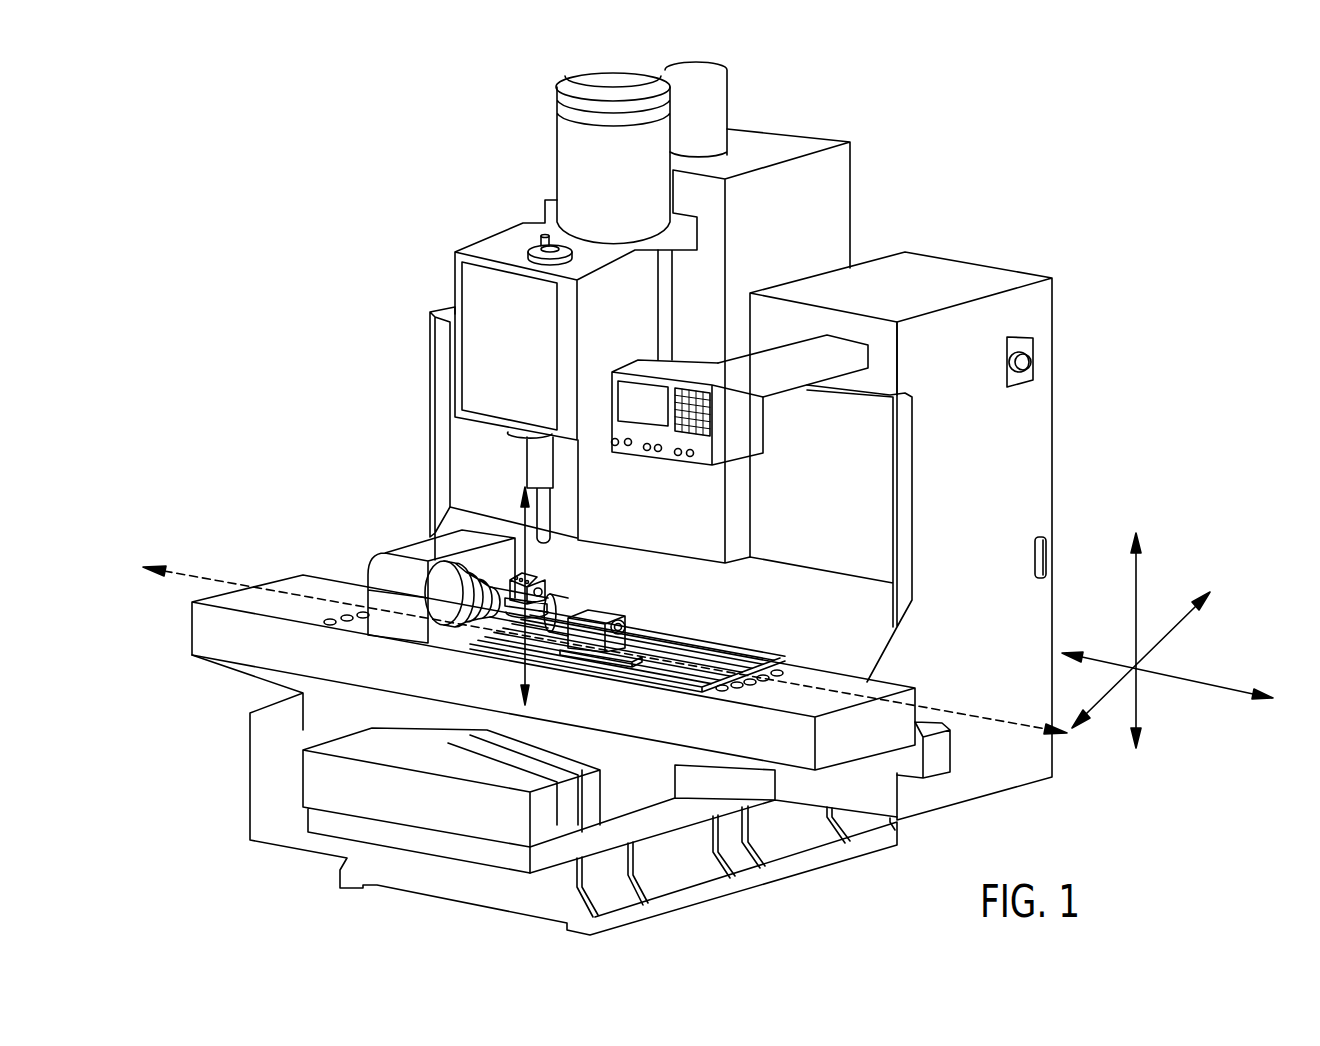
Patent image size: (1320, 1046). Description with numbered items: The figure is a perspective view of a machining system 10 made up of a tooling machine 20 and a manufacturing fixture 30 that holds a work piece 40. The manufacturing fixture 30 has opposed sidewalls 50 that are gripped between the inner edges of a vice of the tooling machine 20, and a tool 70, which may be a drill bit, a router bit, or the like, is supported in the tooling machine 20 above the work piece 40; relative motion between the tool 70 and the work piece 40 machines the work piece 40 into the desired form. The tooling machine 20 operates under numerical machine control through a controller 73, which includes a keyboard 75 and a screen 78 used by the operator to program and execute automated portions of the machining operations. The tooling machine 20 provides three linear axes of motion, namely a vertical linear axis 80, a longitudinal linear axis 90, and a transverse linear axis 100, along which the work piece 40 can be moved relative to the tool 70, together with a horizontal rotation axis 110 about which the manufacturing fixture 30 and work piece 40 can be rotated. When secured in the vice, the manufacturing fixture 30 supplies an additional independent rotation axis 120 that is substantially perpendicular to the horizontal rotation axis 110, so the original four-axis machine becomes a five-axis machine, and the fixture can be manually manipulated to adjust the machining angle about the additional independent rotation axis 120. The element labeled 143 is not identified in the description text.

The machining system 10 is at (1003, 222).
The tooling machine 20 is at (1056, 527).
The manufacturing fixture 30 is at (481, 627).
The work piece 40 is at (488, 589).
The opposed sidewalls 50 is at (483, 607).
The tool 70 is at (548, 500).
The controller 73 is at (735, 405).
The keyboard 75 is at (745, 433).
The screen 78 is at (632, 388).
The vertical linear axis 80 is at (1137, 577).
The longitudinal linear axis 90 is at (1210, 688).
The transverse linear axis 100 is at (1168, 633).
The horizontal rotation axis 110 is at (212, 575).
The additional independent rotation axis 120 is at (527, 680).
The workpiece 143 is at (537, 583).